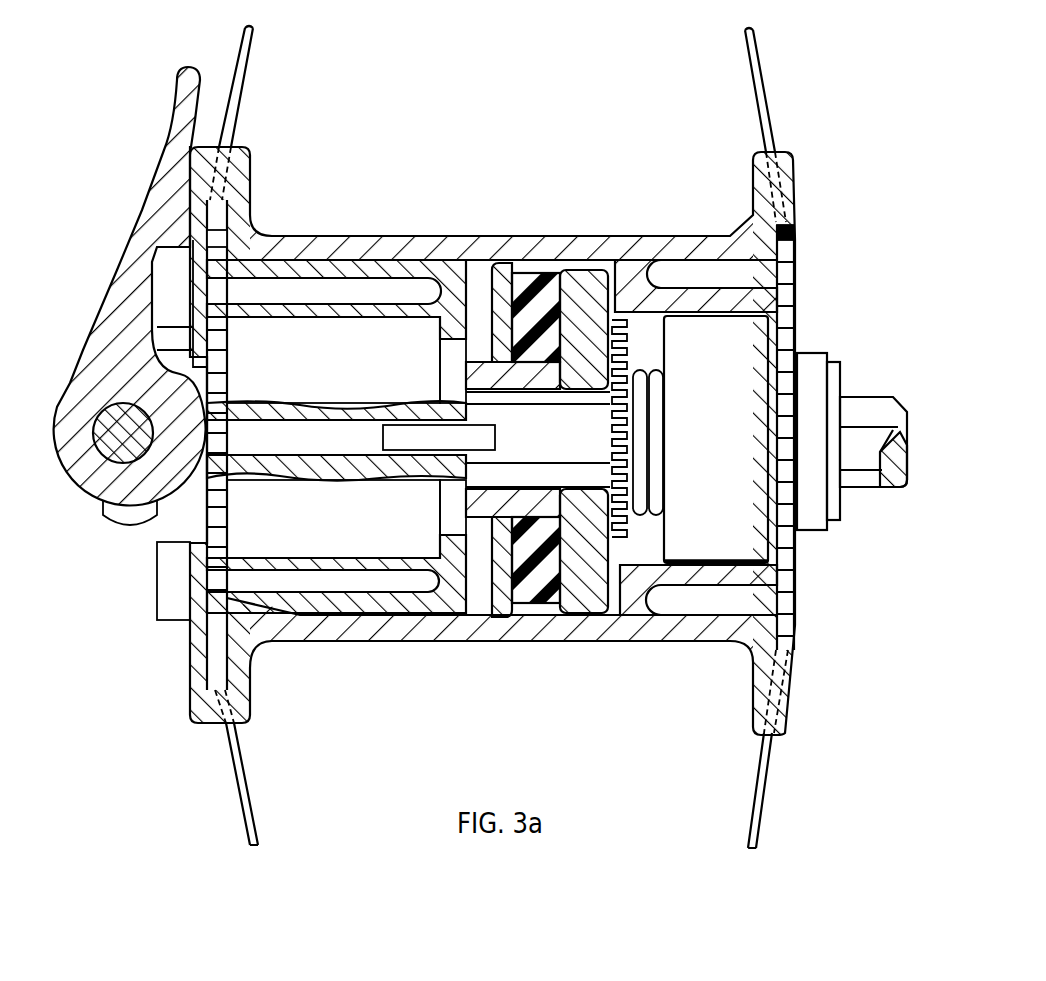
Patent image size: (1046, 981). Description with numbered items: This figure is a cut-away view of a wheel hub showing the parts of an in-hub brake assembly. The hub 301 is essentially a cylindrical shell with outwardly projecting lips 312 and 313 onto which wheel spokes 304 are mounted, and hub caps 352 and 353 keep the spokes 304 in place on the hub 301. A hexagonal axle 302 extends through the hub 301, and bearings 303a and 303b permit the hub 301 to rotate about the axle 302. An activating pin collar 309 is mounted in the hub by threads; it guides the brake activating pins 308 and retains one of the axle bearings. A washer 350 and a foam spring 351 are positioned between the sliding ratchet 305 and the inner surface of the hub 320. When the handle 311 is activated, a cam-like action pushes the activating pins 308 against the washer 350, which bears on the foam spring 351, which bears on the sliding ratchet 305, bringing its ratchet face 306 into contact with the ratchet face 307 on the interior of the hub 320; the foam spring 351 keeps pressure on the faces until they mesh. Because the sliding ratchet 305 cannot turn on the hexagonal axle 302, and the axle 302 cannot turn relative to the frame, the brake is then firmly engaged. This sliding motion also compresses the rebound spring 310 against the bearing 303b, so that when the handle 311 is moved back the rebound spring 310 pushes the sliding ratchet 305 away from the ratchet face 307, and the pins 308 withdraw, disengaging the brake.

The hub 301 is at (718, 710).
The hexagonal axle 302 is at (853, 400).
The axle bearing 303a is at (278, 530).
The axle bearing 303b is at (720, 524).
The wheel spokes 304 is at (244, 108).
The sliding ratchet 305 is at (597, 613).
The ratchet face 306 is at (605, 414).
The ratchet face 307 is at (640, 400).
The brake activating pins 308 is at (335, 270).
The activating pin collar 309 is at (338, 600).
The rebound spring 310 is at (642, 373).
The handle 311 is at (117, 505).
The outwardly projecting lip 312 is at (750, 178).
The outwardly projecting lip 313 is at (243, 708).
The inner surface of the hub 320 is at (790, 632).
The washer 350 is at (500, 603).
The foam spring 351 is at (533, 600).
The hub cap 352 is at (200, 657).
The hub cap 353 is at (790, 287).